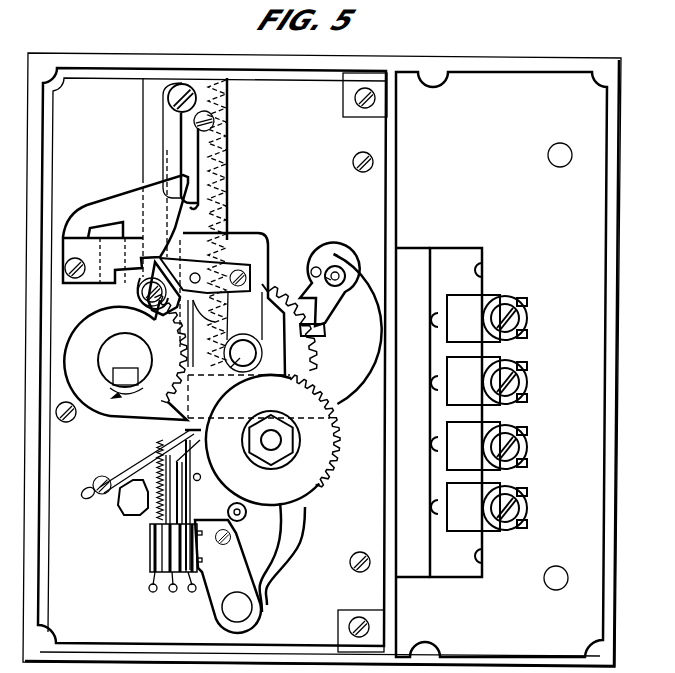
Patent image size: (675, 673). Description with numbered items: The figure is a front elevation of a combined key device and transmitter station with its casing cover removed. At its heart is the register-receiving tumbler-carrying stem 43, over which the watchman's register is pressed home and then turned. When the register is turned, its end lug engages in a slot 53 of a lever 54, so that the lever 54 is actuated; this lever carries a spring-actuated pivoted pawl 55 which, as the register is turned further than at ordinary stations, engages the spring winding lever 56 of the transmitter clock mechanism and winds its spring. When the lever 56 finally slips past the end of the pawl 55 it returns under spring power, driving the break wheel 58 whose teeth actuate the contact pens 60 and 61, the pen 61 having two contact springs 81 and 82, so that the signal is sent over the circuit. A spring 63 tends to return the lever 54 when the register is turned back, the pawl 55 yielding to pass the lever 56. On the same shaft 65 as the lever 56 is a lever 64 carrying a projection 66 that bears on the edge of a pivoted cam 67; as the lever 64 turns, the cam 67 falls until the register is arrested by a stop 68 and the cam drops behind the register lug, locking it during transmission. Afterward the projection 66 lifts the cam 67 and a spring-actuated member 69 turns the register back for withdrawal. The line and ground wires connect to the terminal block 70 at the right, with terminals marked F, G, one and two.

The tumbler-carrying stem 43 is at (107, 353).
The slot 53 is at (118, 393).
The lever 54 is at (246, 433).
The spring-actuated pivoted pawl 55 is at (307, 282).
The spring winding lever 56 is at (323, 328).
The break wheel 58 is at (264, 440).
The contact pen 60 is at (153, 503).
The contact pen 61 is at (148, 525).
The spring 63 is at (230, 166).
The lever 64 is at (232, 317).
The shaft 65 is at (228, 372).
The projection 66 is at (223, 263).
The pivoted cam 67 is at (130, 205).
The stop 68 is at (142, 283).
The spring-actuated member 69 is at (143, 295).
The terminal block 70 is at (447, 258).
The contact spring 81 is at (181, 517).
The contact spring 82 is at (183, 503).